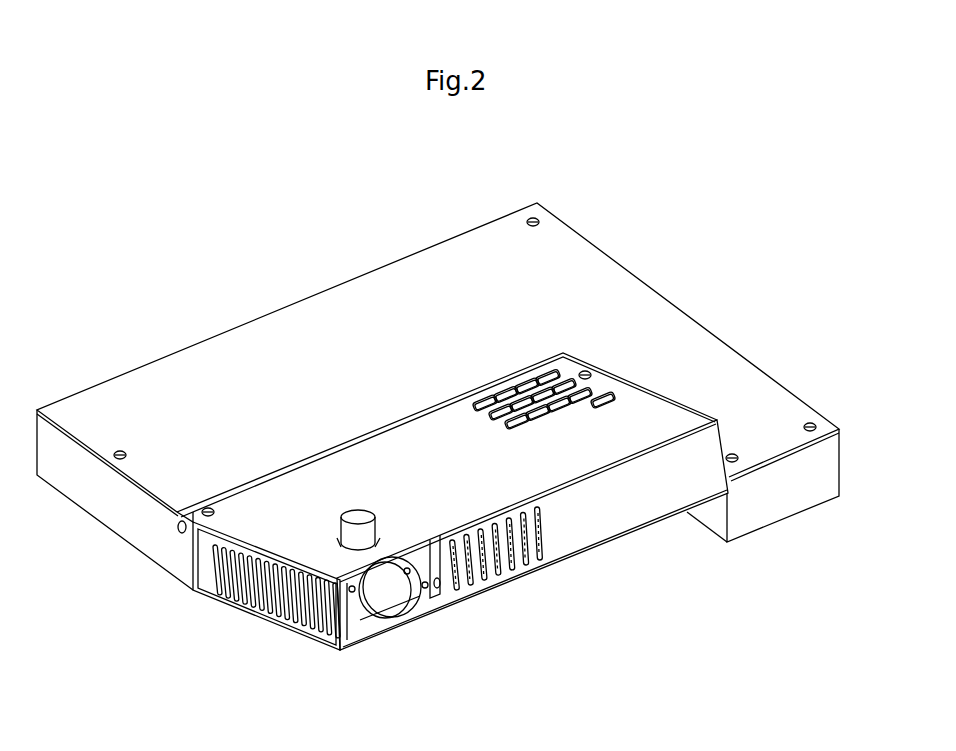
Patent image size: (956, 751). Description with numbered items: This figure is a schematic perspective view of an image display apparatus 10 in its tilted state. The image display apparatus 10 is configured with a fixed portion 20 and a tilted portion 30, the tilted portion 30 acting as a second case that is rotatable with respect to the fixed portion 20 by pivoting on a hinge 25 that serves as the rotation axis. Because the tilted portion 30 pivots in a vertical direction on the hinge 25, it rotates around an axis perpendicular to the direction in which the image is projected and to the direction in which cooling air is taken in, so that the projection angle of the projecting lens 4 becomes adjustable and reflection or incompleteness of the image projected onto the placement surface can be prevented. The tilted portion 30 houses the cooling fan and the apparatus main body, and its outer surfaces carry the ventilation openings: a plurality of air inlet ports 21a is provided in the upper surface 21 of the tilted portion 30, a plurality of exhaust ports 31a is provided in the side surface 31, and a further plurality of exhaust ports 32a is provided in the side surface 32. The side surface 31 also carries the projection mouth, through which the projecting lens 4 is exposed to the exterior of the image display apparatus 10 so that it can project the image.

The image display apparatus 10 is at (682, 253).
The fixed portion 20 is at (413, 272).
The upper surface 21 is at (633, 430).
The air inlet ports 21a is at (551, 383).
The hinge 25 is at (242, 513).
The tilted portion 30 is at (197, 522).
The side surface 31 is at (608, 515).
The exhaust ports 31a is at (500, 567).
The side surface 32 is at (207, 577).
The exhaust ports 32a is at (242, 598).
The projecting lens 4 is at (397, 605).